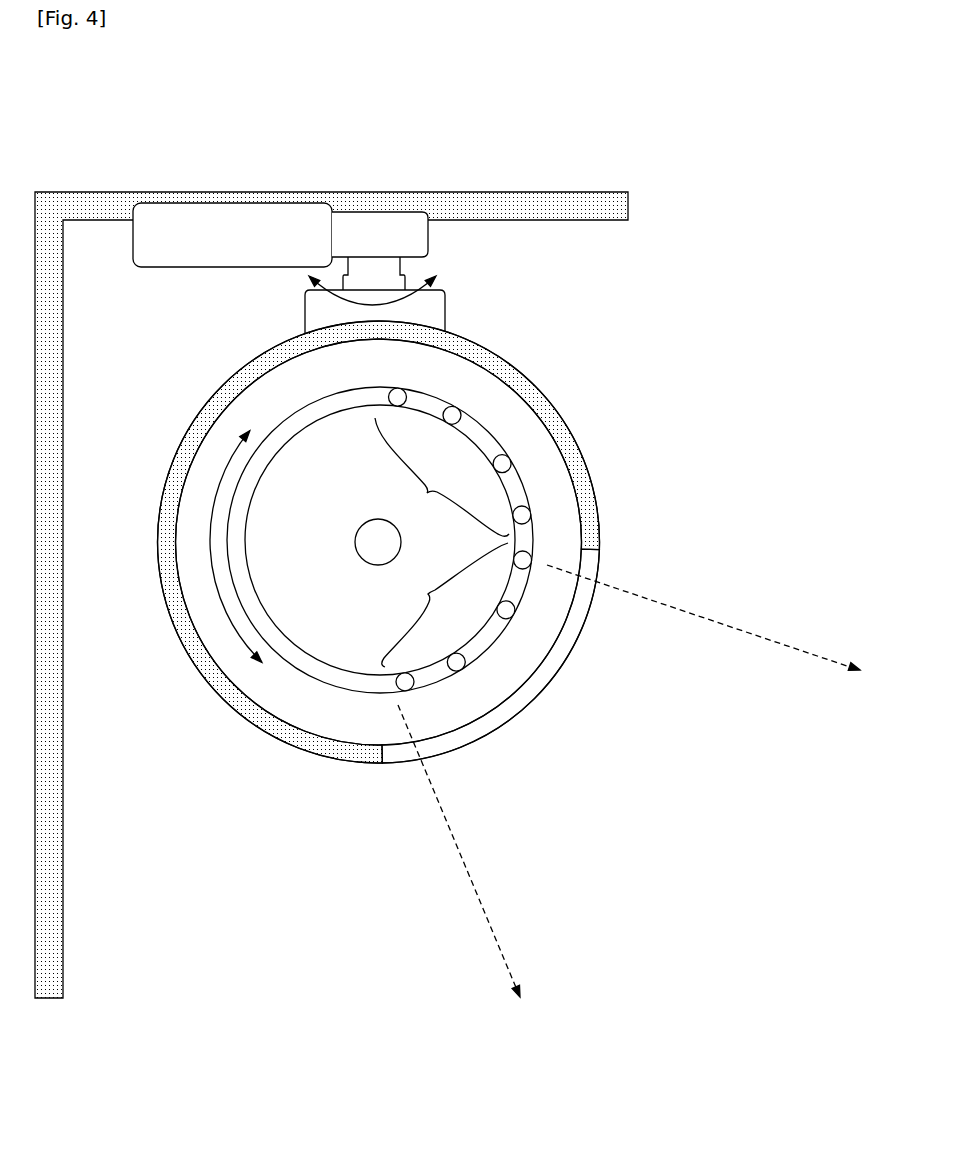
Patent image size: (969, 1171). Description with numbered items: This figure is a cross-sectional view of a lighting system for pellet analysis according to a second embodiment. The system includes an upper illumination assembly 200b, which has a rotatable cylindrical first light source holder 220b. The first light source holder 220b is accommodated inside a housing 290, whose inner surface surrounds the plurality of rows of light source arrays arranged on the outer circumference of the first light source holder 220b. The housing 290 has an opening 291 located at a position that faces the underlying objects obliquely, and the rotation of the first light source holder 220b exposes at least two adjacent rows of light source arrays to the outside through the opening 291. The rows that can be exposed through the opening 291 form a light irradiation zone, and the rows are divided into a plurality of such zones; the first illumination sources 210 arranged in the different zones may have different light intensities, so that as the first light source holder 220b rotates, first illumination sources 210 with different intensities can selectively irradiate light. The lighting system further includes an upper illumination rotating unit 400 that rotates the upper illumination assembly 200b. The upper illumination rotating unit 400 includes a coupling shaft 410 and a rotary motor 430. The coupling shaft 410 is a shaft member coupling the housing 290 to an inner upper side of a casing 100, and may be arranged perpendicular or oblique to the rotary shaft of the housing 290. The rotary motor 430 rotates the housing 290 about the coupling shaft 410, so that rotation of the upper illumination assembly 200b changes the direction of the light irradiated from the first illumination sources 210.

The casing 100 is at (616, 199).
The upper illumination assembly 200b is at (509, 601).
The first illumination sources 210 is at (527, 559).
The first light source holder 220b is at (482, 432).
The housing 290 is at (542, 387).
The opening 291 is at (381, 758).
The upper illumination rotating unit 400 is at (341, 198).
The coupling shaft 410 is at (388, 267).
The rotary motor 430 is at (323, 212).